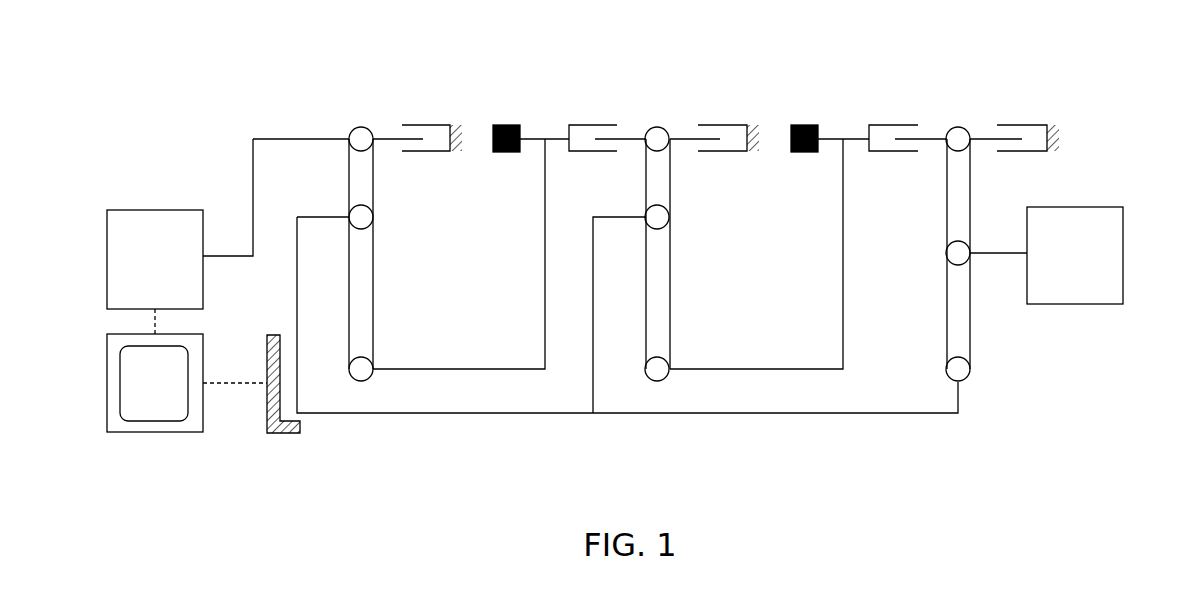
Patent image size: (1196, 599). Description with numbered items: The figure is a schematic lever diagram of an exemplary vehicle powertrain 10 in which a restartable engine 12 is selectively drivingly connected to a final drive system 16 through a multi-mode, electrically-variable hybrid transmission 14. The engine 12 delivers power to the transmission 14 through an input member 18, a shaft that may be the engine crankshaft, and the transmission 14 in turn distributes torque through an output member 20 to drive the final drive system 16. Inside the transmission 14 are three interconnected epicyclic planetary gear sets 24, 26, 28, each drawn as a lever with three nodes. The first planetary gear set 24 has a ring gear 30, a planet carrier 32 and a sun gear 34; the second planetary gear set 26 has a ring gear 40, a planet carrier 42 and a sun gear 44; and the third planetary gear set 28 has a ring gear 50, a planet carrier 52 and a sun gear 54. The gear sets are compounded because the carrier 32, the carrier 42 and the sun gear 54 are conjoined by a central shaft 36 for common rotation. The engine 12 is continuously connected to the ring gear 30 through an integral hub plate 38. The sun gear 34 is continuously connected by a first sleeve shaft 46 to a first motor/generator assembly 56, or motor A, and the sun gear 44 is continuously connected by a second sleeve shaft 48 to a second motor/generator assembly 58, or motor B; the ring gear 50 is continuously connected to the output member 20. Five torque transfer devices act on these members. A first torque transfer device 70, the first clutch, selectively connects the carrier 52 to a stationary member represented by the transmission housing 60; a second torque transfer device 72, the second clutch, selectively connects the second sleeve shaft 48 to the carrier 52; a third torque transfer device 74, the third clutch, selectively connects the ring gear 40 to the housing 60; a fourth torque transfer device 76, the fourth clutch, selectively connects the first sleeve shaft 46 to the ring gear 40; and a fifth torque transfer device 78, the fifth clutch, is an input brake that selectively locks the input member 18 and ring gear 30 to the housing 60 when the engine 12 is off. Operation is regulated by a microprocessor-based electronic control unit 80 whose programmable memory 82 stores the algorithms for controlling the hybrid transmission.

The vehicle powertrain system 10 is at (158, 100).
The restartable engine 12 is at (107, 270).
The multi-mode, electrically-variable hybrid power transmission 14 is at (550, 86).
The final drive system 16 is at (1123, 252).
The input member 18 is at (233, 255).
The transmission output member 20 is at (995, 253).
The first planetary gear set 24 is at (385, 238).
The second planetary gear set 26 is at (681, 244).
The third planetary gear set 28 is at (943, 240).
The first member of first planetary gear set 30 is at (361, 127).
The second member of first planetary gear set 32 is at (373, 217).
The third member of first planetary gear set 34 is at (365, 381).
The central shaft 36 is at (478, 413).
The integral hub plate 38 is at (293, 138).
The first member of second planetary gear set 40 is at (657, 127).
The second member of second planetary gear set 42 is at (670, 217).
The third member of second planetary gear set 44 is at (662, 381).
The first sleeve shaft 46 is at (510, 368).
The second sleeve shaft 48 is at (812, 368).
The first member of third planetary gear set 50 is at (947, 253).
The second member of third planetary gear set 52 is at (958, 127).
The third member of third planetary gear set 54 is at (947, 372).
The first motor/generator assembly 56 is at (500, 152).
The second motor/generator assembly 58 is at (800, 152).
The transmission housing 60 is at (455, 124).
The first torque transfer device 70 is at (1052, 168).
The second torque transfer device 72 is at (912, 116).
The third torque transfer device 74 is at (763, 167).
The fourth torque transfer device 76 is at (583, 110).
The fifth torque transfer device 78 is at (461, 167).
The electronic control unit 80 is at (107, 350).
The programmable memory 82 is at (120, 405).